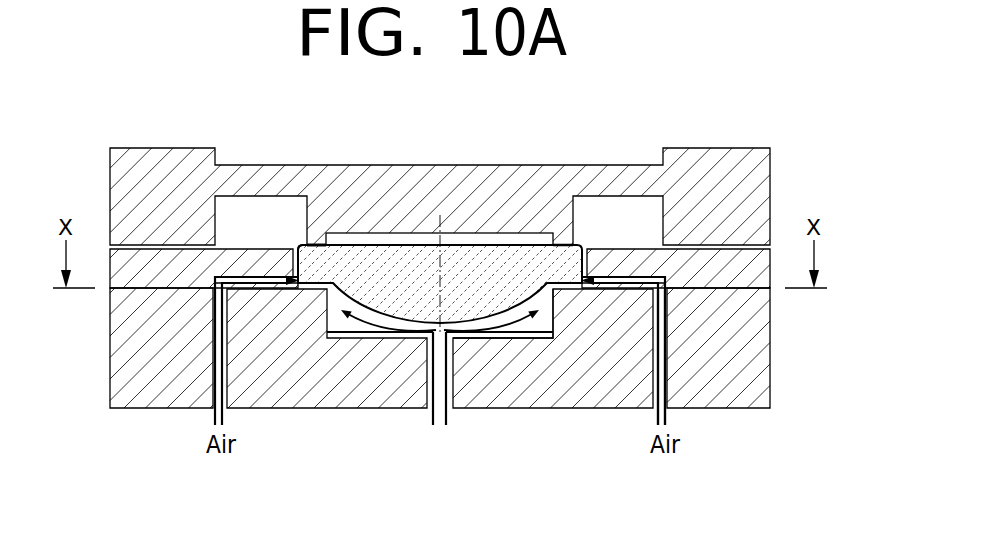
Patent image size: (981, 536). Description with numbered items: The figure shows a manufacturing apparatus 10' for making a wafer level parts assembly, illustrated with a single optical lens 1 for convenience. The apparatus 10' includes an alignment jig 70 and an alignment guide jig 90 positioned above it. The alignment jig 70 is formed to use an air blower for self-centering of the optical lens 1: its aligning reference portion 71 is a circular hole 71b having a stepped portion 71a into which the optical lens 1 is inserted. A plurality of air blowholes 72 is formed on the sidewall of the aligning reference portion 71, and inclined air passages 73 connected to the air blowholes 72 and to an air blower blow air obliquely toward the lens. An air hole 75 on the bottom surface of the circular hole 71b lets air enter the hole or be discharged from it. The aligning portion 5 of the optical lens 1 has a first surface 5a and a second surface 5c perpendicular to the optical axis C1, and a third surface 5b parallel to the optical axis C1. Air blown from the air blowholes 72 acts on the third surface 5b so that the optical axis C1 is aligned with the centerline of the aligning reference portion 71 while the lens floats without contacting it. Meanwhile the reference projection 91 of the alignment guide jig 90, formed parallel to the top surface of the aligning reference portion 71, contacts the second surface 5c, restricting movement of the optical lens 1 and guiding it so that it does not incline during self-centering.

The manufacturing apparatus 10' is at (440, 237).
The alignment guide jig 90 is at (787, 187).
The reference projection 91 is at (558, 240).
The alignment jig 70 is at (787, 329).
The aligning reference portion 71 is at (586, 247).
The stepped portion 71a is at (558, 290).
The circular hole 71b is at (351, 330).
The air blowholes 72 is at (583, 289).
The air passages 73 is at (619, 289).
The air hole 75 is at (452, 376).
The optical lens 1 is at (486, 234).
The optical axis C1 is at (438, 218).
The aligning portion 5 is at (335, 113).
The first surface 5a is at (323, 244).
The third surface 5b is at (296, 258).
The second surface 5c is at (309, 244).